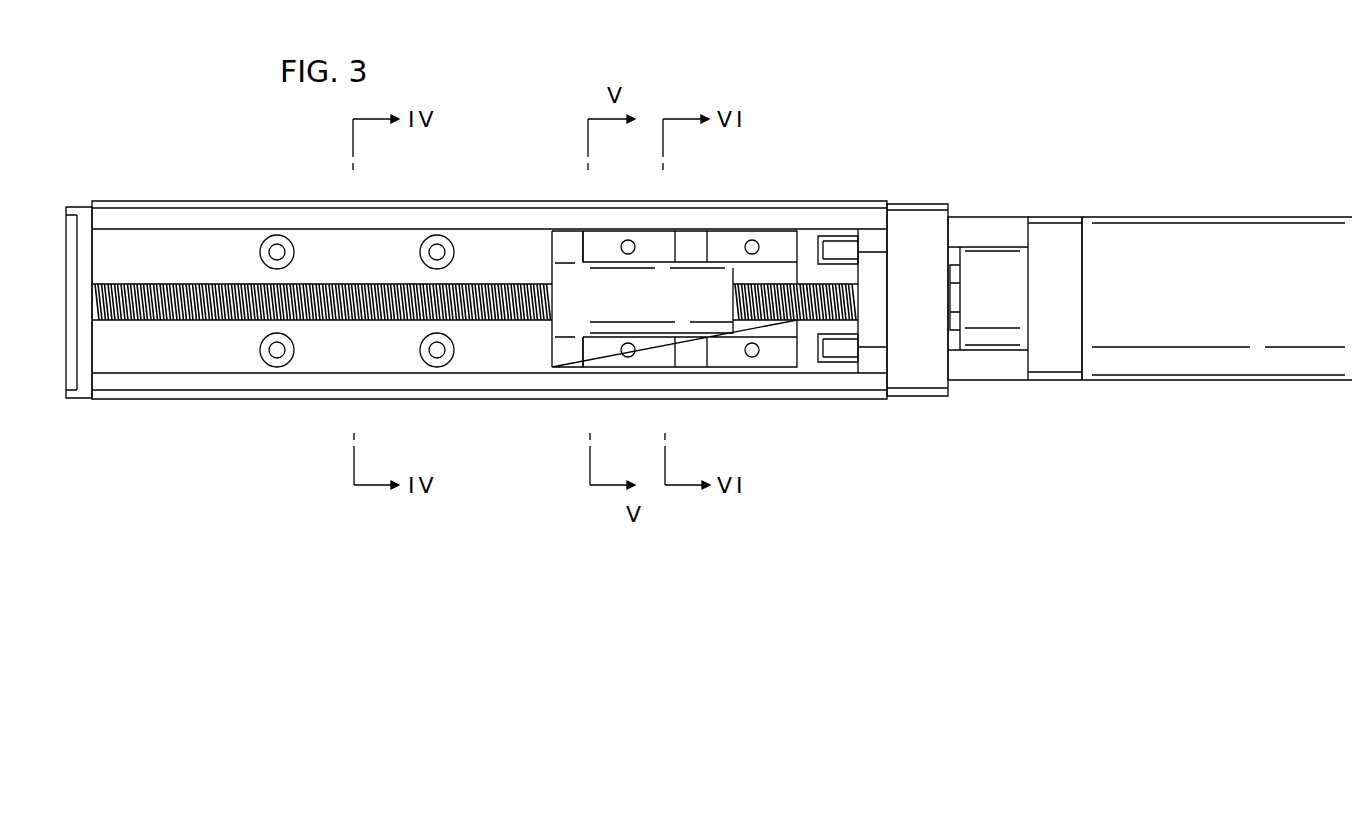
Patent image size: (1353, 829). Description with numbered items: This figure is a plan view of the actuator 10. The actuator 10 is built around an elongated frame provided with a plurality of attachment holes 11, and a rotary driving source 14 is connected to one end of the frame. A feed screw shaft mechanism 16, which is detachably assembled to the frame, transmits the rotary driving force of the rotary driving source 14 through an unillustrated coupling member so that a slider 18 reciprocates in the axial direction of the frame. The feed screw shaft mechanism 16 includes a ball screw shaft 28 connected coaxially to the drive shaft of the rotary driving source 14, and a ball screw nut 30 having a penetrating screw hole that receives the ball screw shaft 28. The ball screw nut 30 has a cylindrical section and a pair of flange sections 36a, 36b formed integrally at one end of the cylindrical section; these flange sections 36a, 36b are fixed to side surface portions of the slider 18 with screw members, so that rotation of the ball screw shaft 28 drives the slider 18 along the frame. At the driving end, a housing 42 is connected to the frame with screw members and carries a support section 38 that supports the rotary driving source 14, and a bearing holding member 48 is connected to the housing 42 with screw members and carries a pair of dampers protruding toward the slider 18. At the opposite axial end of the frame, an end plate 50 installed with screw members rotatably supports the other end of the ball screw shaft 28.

The actuator 10 is at (1211, 128).
The attachment holes 11 is at (278, 250).
The rotary driving source 14 is at (1187, 250).
The feed screw shaft mechanism 16 is at (662, 283).
The slider 18 is at (779, 348).
The ball screw shaft 28 is at (153, 322).
The ball screw nut 30 is at (567, 307).
The flange section 36a is at (558, 235).
The flange section 36b is at (563, 365).
The support section 38 is at (1045, 258).
The housing 42 is at (908, 250).
The bearing holding member 48 is at (866, 258).
The end plate 50 is at (78, 208).